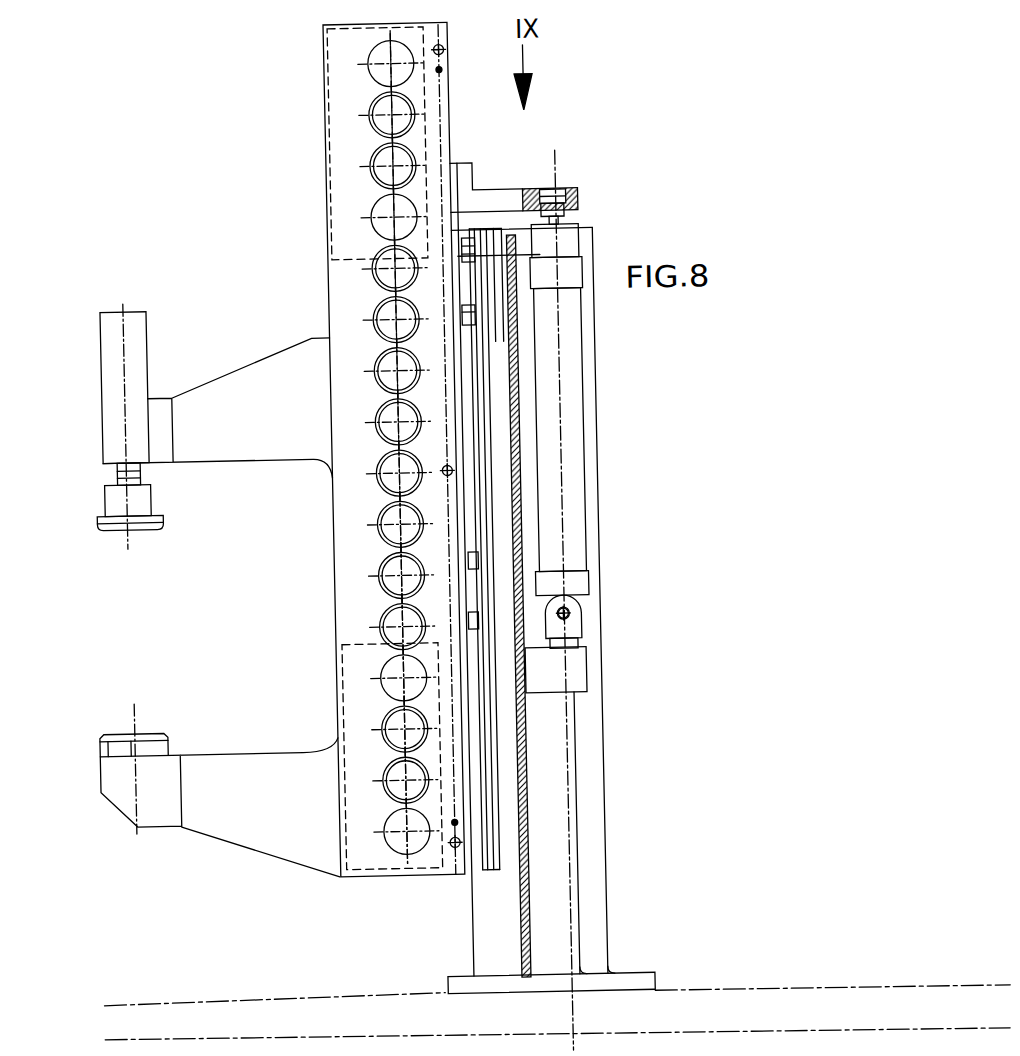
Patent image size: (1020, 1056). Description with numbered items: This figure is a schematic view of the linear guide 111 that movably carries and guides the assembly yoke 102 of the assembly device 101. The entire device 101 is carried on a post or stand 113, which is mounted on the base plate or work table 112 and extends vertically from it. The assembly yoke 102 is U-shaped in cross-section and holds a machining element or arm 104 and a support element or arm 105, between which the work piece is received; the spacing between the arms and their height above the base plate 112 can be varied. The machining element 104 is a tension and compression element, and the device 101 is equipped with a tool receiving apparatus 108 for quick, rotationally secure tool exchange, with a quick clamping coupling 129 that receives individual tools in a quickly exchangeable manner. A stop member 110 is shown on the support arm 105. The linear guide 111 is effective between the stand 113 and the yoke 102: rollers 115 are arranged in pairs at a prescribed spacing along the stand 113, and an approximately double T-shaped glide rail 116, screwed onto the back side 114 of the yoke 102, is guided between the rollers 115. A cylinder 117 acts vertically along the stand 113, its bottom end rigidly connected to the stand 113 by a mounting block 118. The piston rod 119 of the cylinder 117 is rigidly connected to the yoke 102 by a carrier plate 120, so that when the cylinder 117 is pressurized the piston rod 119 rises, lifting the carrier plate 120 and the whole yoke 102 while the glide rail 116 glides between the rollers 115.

The assembly device 101 is at (206, 604).
The assembly yoke 102 is at (330, 582).
The machining element 104 is at (191, 449).
The support element 105 is at (228, 768).
The tool receiving apparatus 108 is at (104, 409).
The stop member 110 is at (138, 729).
The linear guide 111 is at (459, 693).
The base plate 112 is at (630, 1002).
The stand 113 is at (597, 398).
The back side 114 is at (445, 138).
The rollers 115 is at (452, 320).
The glide rail 116 is at (456, 865).
The cylinder 117 is at (570, 462).
The mounting block 118 is at (583, 693).
The piston rod 119 is at (562, 216).
The carrier plate 120 is at (491, 200).
The quick clamping coupling 129 is at (112, 509).